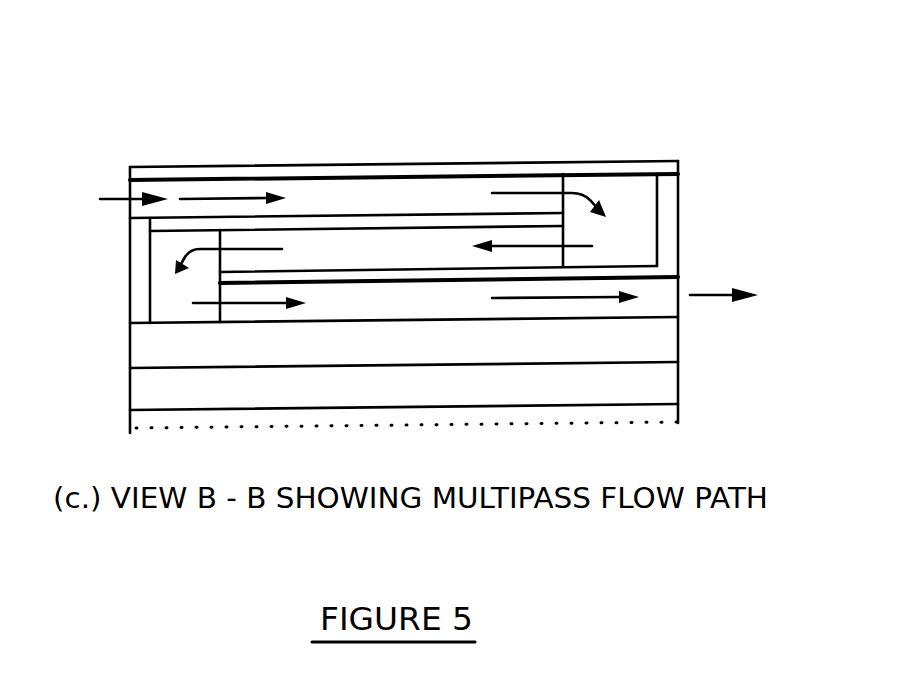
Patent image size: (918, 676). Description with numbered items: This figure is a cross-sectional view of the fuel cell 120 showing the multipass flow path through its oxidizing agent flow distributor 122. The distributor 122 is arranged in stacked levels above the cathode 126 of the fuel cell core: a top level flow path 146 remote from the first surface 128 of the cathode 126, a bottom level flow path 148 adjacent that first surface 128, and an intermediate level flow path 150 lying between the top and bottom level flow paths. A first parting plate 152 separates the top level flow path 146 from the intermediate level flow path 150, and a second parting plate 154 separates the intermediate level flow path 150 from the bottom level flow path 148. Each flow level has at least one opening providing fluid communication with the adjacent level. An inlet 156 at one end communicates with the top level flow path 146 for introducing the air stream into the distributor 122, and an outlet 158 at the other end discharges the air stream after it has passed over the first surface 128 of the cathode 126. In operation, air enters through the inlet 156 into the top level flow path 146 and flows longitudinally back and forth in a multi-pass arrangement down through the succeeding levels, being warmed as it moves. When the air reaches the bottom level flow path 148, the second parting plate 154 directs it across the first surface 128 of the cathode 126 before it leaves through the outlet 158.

The fuel cell 120 is at (580, 43).
The oxidizing agent flow distributor 122 is at (774, 197).
The cathode 126 is at (132, 350).
The first surface 128 is at (520, 320).
The top level flow path 146 is at (424, 197).
The bottom level flow path 148 is at (357, 307).
The intermediate level flow path 150 is at (305, 248).
The first parting plate 152 is at (463, 217).
The second parting plate 154 is at (423, 273).
The inlet 156 is at (130, 192).
The outlet 158 is at (658, 303).